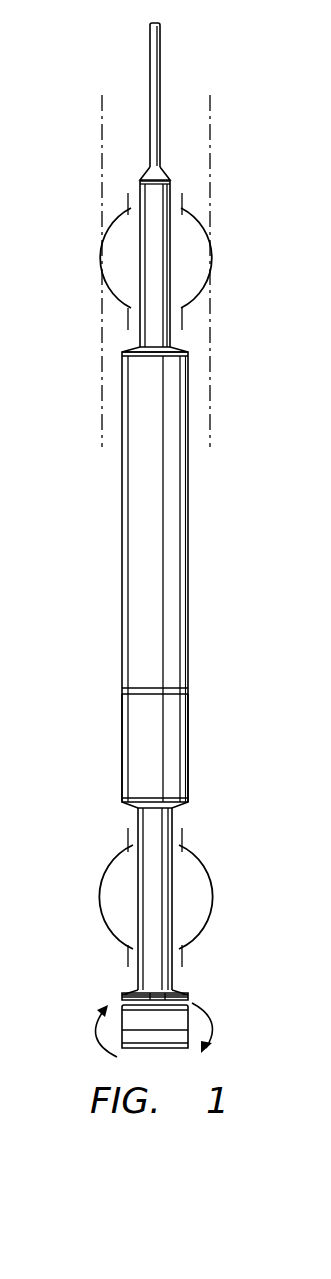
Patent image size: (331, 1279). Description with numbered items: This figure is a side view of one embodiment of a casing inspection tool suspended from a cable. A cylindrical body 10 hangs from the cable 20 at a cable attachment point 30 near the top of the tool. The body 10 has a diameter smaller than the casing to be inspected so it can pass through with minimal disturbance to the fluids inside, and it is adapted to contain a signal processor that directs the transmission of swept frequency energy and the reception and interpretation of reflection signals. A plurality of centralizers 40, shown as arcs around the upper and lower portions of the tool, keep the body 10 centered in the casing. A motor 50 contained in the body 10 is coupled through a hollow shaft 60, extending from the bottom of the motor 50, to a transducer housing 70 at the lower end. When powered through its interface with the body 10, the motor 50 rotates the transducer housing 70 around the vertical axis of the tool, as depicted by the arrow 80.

The cylindrical body 10 is at (110, 579).
The cable 20 is at (142, 44).
The cable attachment point 30 is at (169, 165).
The centralizers 40 is at (225, 287).
The motor 50 is at (210, 752).
The hollow shaft 60 is at (117, 820).
The transducer housing 70 is at (239, 1038).
The arrow 80 is at (72, 1039).